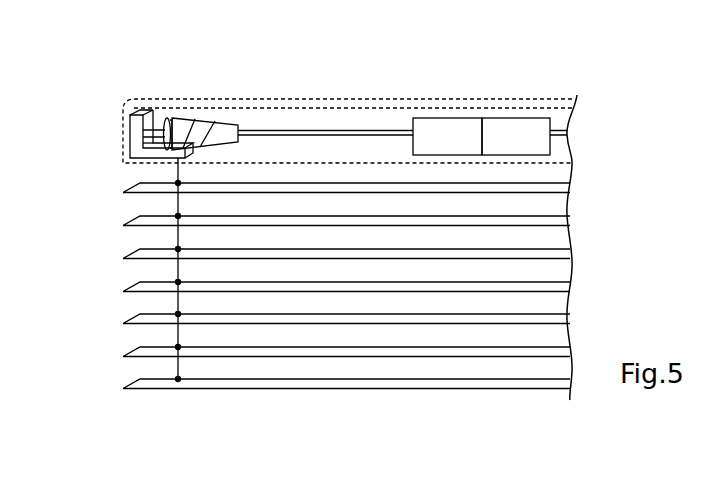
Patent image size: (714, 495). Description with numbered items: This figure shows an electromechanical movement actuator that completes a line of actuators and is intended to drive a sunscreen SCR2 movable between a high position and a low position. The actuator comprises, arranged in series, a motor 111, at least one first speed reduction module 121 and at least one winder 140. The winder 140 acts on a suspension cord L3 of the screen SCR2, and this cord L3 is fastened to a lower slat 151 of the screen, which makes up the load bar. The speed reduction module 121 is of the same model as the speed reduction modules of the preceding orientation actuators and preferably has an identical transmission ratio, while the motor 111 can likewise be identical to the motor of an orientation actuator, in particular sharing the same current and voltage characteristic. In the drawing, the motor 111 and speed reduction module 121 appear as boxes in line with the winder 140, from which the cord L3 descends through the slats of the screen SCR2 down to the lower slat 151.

The winder 140 is at (197, 120).
The first speed reduction module 121 is at (433, 118).
The motor 111 is at (517, 128).
The slat 151 is at (153, 385).
The sunscreen SCR2 is at (112, 238).
The suspension cord L3 is at (178, 308).